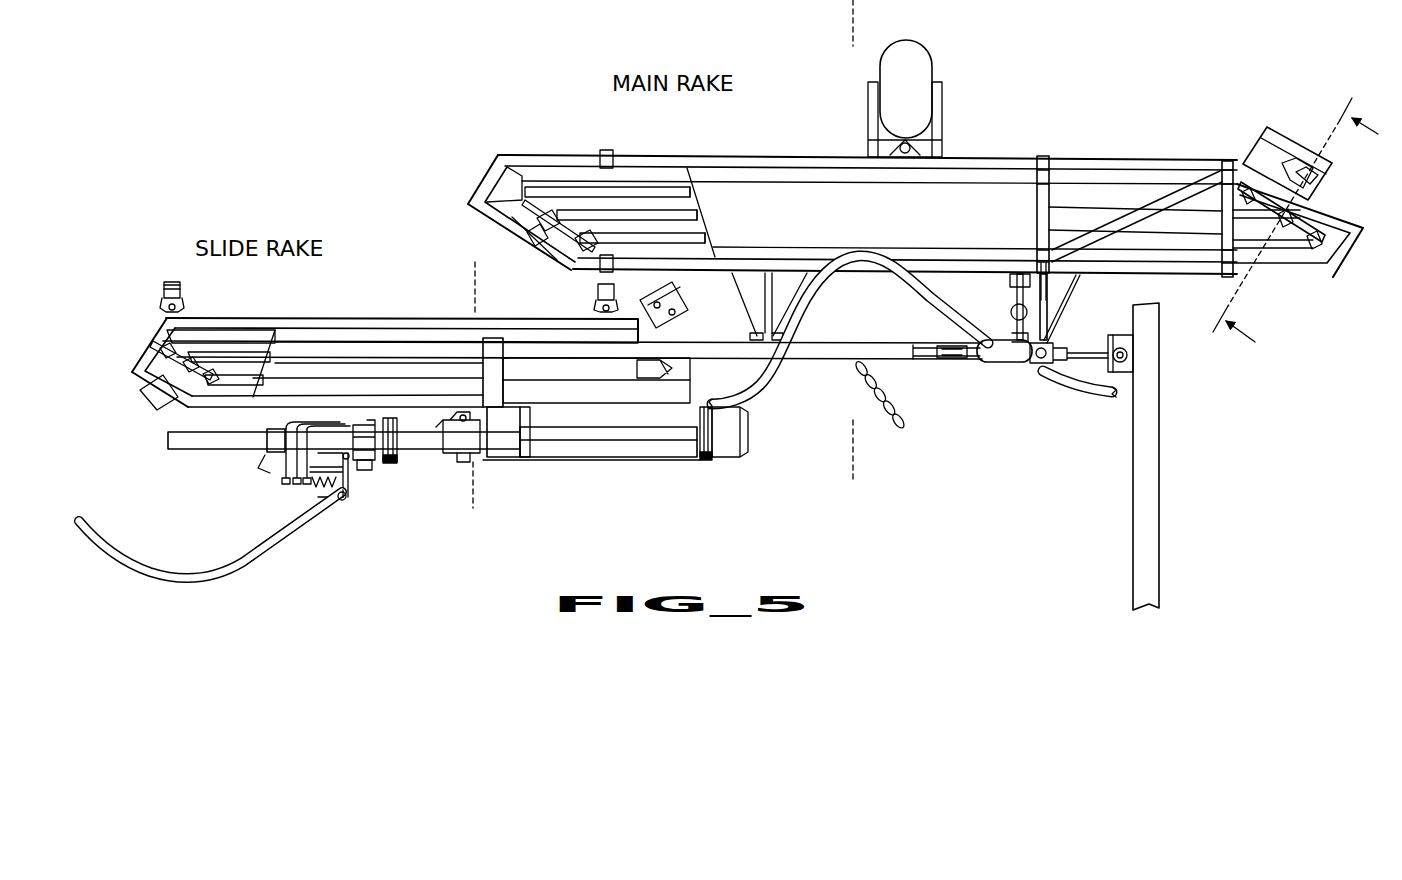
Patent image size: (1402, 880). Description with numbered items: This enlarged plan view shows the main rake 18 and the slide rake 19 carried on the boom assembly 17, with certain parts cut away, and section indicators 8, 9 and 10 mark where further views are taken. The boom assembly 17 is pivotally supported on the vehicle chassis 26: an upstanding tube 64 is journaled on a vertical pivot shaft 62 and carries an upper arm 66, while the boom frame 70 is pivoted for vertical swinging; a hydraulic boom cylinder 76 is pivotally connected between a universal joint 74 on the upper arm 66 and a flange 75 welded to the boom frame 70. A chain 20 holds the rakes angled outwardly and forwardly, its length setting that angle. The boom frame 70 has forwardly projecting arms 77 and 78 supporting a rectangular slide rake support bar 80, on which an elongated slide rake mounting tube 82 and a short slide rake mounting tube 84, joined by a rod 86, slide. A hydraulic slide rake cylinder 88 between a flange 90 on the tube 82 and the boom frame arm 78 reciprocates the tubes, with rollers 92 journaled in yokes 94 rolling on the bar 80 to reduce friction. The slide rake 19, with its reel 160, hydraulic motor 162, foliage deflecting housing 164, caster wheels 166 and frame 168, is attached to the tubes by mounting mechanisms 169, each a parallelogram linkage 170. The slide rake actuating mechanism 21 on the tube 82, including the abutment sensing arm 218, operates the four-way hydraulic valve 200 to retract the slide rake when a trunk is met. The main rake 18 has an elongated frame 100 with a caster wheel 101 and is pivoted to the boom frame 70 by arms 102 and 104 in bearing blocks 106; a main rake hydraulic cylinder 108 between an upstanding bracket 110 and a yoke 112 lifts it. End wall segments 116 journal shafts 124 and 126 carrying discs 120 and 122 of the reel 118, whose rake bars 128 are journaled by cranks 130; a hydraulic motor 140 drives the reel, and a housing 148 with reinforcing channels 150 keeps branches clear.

The section line 8- 8 is at (833, 12).
The section line 9- 9 is at (1288, 220).
The section line 10- 10 is at (500, 276).
The boom assembly 17 is at (905, 372).
The main rake 18 is at (752, 150).
The slide rake 19 is at (352, 314).
The chain 20 is at (862, 411).
The slide rake actuating mechanism 21 is at (236, 572).
The vehicle chassis 26 is at (1158, 438).
The vertical pivot shaft 62 is at (1119, 347).
The upstanding tube 64 is at (1128, 355).
The upper arm 66 is at (1085, 350).
The boom frame 70 is at (826, 352).
The universal joint 74 is at (1050, 368).
The flange 75 is at (918, 350).
The hydraulic boom cylinder 76 is at (1028, 360).
The forwardly projecting arm 77 is at (487, 372).
The forwardly projecting arm 78 is at (732, 388).
The slide rake support bar 80 is at (168, 440).
The elongated slide rake mounting tube 82 is at (270, 430).
The short slide rake mounting tube 84 is at (714, 444).
The rod 86 is at (647, 462).
The hydraulic slide rake cylinder 88 is at (547, 432).
The flange 90 is at (458, 437).
The rollers 92 is at (373, 466).
The yokes 94 is at (390, 433).
The elongated frame 100 is at (950, 160).
The caster wheel 101 is at (922, 58).
The arm 102 is at (743, 284).
The arm 104 is at (1050, 288).
The bearing blocks 106 is at (755, 331).
The main rake hydraulic cylinder 108 is at (1010, 306).
The upstanding bracket 110 is at (1012, 313).
The yoke 112 is at (1037, 277).
The end wall segments 116 is at (468, 205).
The reel 118 is at (565, 186).
The disc 120 is at (515, 218).
The disc 122 is at (1308, 220).
The shaft 124 is at (527, 236).
The shaft 126 is at (1316, 178).
The rake bars 128 is at (690, 203).
The cranks 130 is at (555, 262).
The hydraulic motor 140 is at (1252, 157).
The housing 148 is at (858, 225).
The reinforcing channels 150 is at (1036, 194).
The reel 160 is at (237, 333).
The hydraulic motor 162 is at (671, 334).
The foliage deflecting housing 164 is at (390, 347).
The caster wheels 166 is at (185, 278).
The slide rake frame 168 is at (165, 321).
The mounting mechanism 169 is at (393, 468).
The parallelogram linkage 170 is at (383, 418).
The four-way hydraulic valve 200 is at (273, 473).
The abutment sensing arm 218 is at (130, 556).